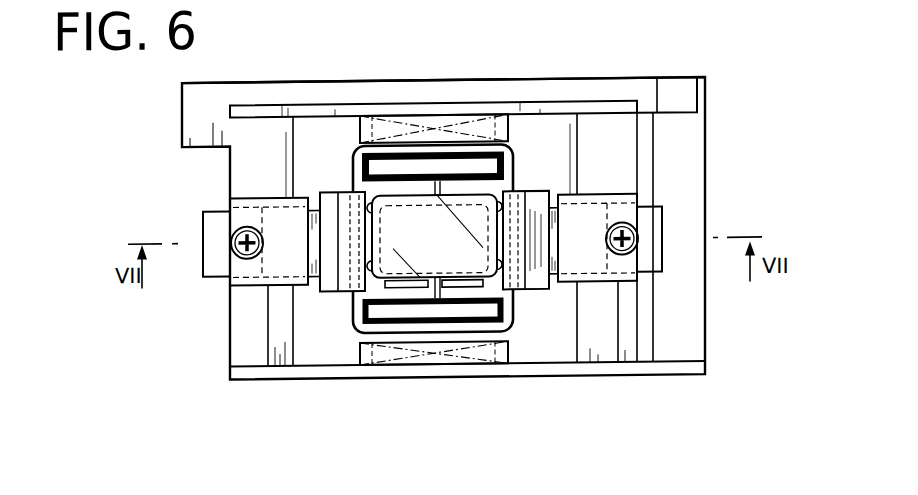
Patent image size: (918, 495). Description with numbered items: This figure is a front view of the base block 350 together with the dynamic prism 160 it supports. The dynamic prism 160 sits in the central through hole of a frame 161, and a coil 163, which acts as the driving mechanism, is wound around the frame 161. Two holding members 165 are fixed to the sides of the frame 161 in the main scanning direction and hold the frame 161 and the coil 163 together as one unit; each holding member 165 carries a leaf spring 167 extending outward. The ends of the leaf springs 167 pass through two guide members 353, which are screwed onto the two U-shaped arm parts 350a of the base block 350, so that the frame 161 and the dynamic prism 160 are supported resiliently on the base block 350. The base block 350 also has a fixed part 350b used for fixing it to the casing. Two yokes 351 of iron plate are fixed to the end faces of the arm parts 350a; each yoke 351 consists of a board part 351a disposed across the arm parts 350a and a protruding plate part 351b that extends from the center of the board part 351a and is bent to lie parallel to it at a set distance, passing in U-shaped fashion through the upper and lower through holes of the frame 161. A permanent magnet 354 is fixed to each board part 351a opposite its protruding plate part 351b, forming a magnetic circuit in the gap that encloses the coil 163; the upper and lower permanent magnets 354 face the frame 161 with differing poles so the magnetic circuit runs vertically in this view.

The base block 350 is at (705, 355).
The U-shaped arm parts 350a is at (245, 328).
The fixed part 350b is at (662, 87).
The yoke 351 is at (433, 231).
The board part 351a is at (563, 111).
The protruding plate part 351b is at (442, 230).
The guide member 353 is at (620, 199).
The permanent magnet 354 is at (390, 121).
The dynamic prism 160 is at (398, 246).
The frame 161 is at (513, 296).
The coil 163 is at (510, 329).
The holding member 165 is at (332, 191).
The leaf spring 167 is at (650, 232).